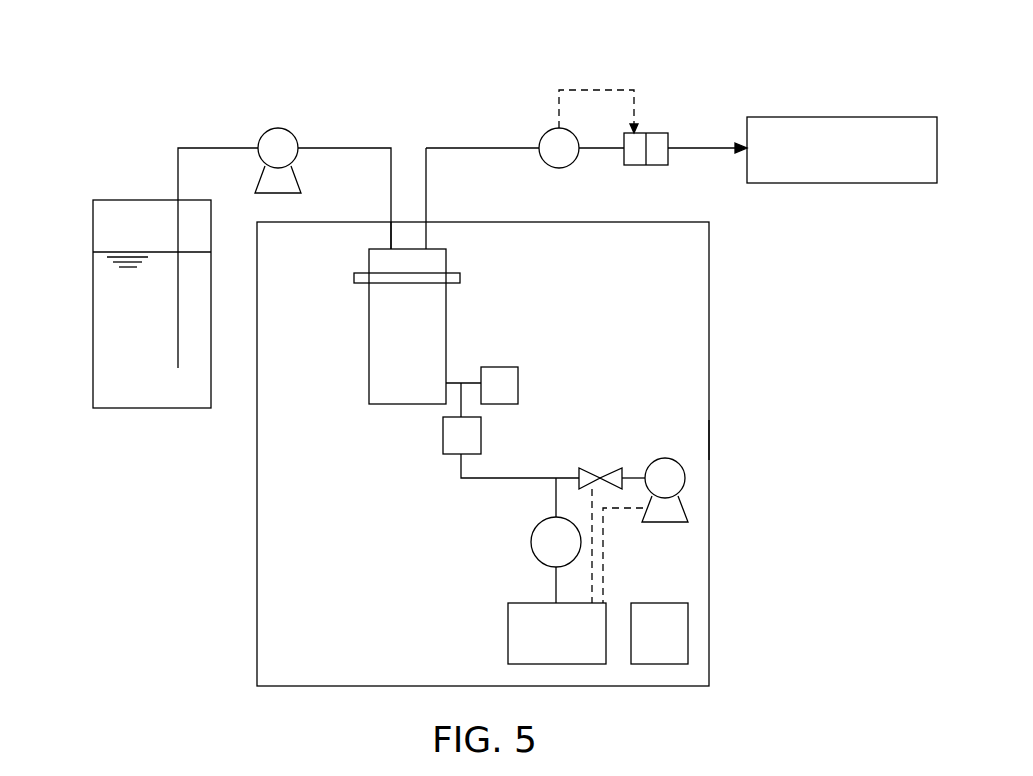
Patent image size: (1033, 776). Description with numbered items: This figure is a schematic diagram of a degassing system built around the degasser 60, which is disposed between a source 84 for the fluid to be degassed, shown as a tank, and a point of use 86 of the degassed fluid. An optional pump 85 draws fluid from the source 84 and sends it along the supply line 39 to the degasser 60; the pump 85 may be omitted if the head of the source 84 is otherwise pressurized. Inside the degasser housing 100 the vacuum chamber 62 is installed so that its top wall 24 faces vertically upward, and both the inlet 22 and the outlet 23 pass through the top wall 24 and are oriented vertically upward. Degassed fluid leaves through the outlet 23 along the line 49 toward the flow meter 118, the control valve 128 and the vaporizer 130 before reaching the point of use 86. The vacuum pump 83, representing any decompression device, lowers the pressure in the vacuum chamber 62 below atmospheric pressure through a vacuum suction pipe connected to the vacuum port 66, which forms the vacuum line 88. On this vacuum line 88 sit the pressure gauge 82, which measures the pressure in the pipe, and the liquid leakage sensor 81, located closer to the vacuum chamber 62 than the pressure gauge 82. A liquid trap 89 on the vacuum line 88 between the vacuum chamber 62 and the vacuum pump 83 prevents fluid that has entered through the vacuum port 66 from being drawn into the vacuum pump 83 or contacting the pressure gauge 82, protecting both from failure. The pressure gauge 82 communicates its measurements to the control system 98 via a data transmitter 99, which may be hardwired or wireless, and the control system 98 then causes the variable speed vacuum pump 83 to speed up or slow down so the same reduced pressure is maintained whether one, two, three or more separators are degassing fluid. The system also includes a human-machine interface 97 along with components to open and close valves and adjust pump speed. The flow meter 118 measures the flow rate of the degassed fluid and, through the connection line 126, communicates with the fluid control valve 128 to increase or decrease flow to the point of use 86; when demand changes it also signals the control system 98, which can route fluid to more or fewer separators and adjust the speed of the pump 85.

The inlet 22 is at (391, 215).
The outlet 23 is at (428, 214).
The top wall 24 is at (442, 249).
The supply line 39 is at (350, 148).
The discharge line 49 is at (494, 148).
The degasser 60 is at (709, 313).
The vacuum chamber 62 is at (369, 320).
The vacuum port 66 is at (446, 383).
The liquid leakage sensor 81 is at (518, 378).
The pressure gauge 82 is at (531, 542).
The vacuum pump 83 is at (680, 522).
The source 84 is at (93, 318).
The pump 85 is at (270, 128).
The point of use 86 is at (870, 117).
The vacuum line 88 is at (520, 478).
The liquid trap 89 is at (443, 433).
The human-machine interface 97 is at (673, 664).
The control system 98 is at (565, 664).
The data transmitter 99 is at (556, 588).
The degasser housing 100 is at (709, 440).
The flow meter 118 is at (552, 168).
The connection line 126 is at (590, 90).
The control valve 128 is at (641, 165).
The vaporizer 130 is at (658, 133).